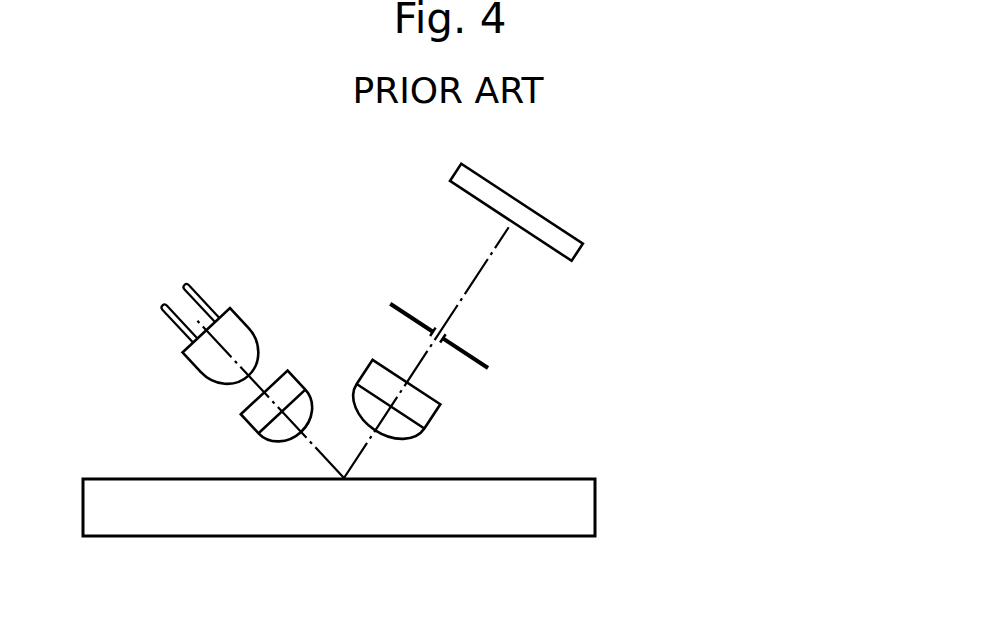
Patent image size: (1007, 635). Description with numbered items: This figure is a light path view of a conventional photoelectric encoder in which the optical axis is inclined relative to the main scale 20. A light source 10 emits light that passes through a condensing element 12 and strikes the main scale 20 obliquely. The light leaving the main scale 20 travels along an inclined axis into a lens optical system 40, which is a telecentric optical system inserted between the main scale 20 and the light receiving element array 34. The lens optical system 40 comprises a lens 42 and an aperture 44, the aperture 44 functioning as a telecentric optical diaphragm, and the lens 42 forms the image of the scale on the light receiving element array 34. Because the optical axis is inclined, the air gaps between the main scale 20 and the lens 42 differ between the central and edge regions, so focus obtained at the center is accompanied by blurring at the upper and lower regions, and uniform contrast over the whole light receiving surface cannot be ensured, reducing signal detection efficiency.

The light source 10 is at (186, 362).
The condenser lens 12 is at (241, 413).
The main scale 20 is at (595, 508).
The light receiving element array 34 is at (583, 245).
The lens optical system 40 is at (498, 376).
The lens 42 is at (440, 405).
The aperture 44 is at (488, 368).